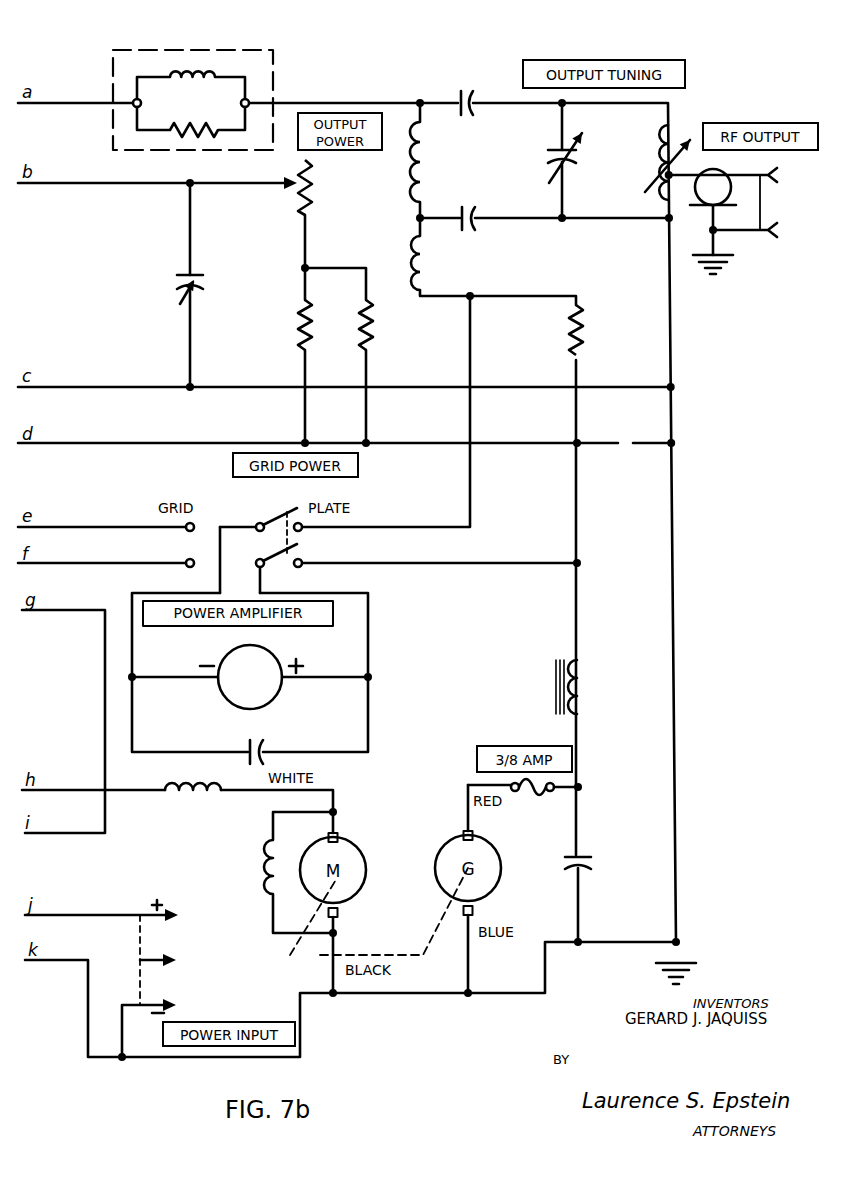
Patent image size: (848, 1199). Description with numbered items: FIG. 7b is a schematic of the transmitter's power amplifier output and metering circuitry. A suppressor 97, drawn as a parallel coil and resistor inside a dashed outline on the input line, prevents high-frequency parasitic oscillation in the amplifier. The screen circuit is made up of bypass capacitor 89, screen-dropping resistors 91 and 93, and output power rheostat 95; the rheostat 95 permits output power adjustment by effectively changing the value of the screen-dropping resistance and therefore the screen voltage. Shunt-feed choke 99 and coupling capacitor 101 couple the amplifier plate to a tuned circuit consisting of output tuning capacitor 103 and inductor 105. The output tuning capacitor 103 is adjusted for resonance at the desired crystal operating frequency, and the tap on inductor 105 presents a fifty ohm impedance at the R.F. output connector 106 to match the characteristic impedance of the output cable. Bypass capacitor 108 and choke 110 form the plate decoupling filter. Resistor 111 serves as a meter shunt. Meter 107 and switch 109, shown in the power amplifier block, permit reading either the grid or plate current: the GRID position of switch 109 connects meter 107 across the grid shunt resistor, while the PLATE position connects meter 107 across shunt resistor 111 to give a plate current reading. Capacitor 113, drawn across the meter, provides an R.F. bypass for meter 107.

The suppressor 97 is at (246, 62).
The output power rheostat 95 is at (315, 187).
The bypass capacitor 89 is at (179, 295).
The screen-dropping resistor 91 is at (297, 325).
The screen-dropping resistor 93 is at (373, 325).
The shunt-feed choke 99 is at (425, 158).
The choke 110 is at (410, 253).
The coupling capacitor 101 is at (462, 92).
The bypass capacitor 108 is at (476, 230).
The output tuning capacitor 103 is at (568, 165).
The inductor 105 is at (656, 158).
The R.F. output connector 106 is at (762, 205).
The resistor 111 is at (584, 324).
The switch 109 is at (296, 508).
The meter 107 is at (222, 699).
The capacitor 113 is at (258, 753).